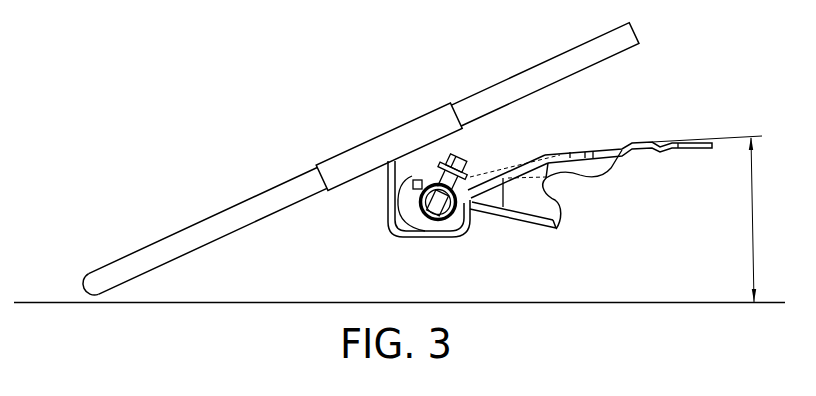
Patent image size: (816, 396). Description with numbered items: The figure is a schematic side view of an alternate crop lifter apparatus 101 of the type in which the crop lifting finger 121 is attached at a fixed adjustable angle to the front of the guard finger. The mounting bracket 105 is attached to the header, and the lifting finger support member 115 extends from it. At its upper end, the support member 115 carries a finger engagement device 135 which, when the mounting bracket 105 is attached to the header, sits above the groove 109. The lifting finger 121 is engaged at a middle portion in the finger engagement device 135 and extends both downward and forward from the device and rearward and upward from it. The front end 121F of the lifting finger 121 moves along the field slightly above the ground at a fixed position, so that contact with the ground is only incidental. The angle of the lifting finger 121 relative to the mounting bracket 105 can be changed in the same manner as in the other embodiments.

The crop lifter apparatus 101 is at (140, 136).
The mounting bracket 105 is at (589, 150).
The groove 109 is at (394, 199).
The lifting finger support member 115 is at (388, 225).
The crop lifting finger 121 is at (223, 208).
The front end 121F is at (83, 279).
The finger engagement device 135 is at (393, 132).